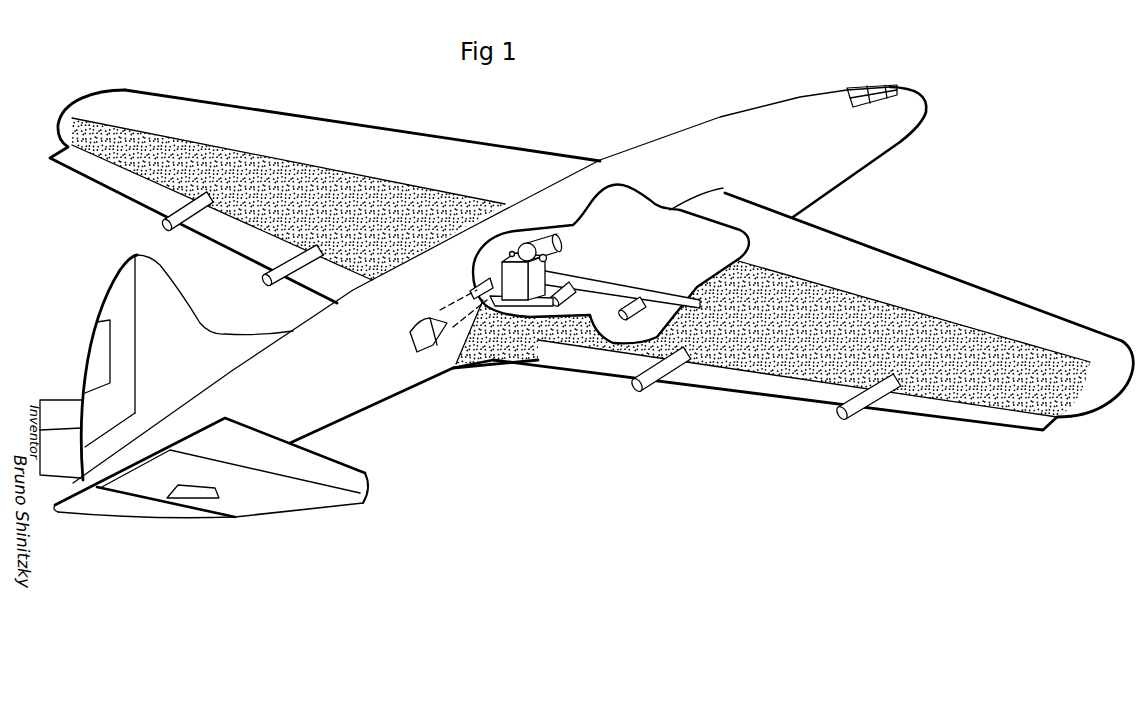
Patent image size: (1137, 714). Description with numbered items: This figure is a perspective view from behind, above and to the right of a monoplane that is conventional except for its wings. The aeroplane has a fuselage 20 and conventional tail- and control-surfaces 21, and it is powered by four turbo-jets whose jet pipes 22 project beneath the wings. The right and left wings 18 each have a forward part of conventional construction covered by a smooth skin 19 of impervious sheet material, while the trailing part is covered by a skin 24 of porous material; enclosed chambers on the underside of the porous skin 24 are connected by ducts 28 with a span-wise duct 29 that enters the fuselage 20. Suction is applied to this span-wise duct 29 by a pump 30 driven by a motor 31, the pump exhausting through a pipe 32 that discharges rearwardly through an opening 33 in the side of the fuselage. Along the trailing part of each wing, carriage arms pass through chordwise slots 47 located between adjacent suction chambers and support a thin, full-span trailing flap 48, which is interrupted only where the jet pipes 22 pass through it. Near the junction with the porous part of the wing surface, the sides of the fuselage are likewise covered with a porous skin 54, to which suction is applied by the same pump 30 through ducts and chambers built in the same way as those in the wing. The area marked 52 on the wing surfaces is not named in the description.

The monoplane wings 18 is at (120, 85).
The smooth skin 19 is at (320, 130).
The fuselage 20 is at (390, 380).
The tail- and control-surfaces 21 is at (50, 447).
The jet pipes 22 is at (170, 231).
The porous skin 24 is at (278, 177).
The ducts 28 is at (622, 302).
The span-wise duct 29 is at (627, 287).
The pump 30 is at (512, 252).
The motor 31 is at (560, 237).
The pipe 32 is at (488, 277).
The opening 33 is at (411, 340).
The chordwise slots 47 is at (200, 197).
The trailing flap 48 is at (122, 183).
The wing top surface 52 is at (200, 123).
The porous skin of fuselage 54 is at (470, 364).